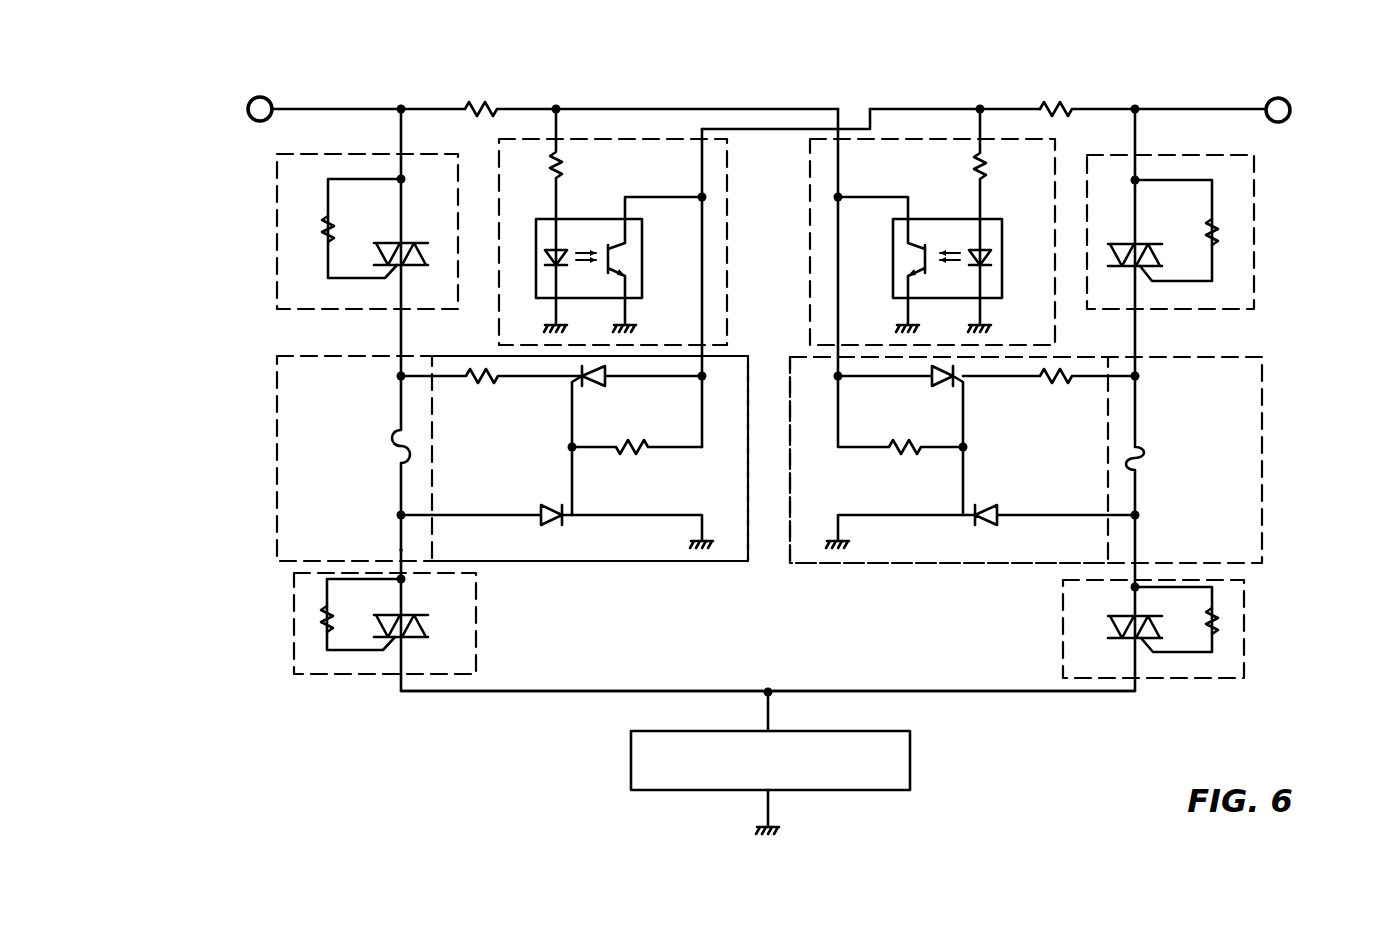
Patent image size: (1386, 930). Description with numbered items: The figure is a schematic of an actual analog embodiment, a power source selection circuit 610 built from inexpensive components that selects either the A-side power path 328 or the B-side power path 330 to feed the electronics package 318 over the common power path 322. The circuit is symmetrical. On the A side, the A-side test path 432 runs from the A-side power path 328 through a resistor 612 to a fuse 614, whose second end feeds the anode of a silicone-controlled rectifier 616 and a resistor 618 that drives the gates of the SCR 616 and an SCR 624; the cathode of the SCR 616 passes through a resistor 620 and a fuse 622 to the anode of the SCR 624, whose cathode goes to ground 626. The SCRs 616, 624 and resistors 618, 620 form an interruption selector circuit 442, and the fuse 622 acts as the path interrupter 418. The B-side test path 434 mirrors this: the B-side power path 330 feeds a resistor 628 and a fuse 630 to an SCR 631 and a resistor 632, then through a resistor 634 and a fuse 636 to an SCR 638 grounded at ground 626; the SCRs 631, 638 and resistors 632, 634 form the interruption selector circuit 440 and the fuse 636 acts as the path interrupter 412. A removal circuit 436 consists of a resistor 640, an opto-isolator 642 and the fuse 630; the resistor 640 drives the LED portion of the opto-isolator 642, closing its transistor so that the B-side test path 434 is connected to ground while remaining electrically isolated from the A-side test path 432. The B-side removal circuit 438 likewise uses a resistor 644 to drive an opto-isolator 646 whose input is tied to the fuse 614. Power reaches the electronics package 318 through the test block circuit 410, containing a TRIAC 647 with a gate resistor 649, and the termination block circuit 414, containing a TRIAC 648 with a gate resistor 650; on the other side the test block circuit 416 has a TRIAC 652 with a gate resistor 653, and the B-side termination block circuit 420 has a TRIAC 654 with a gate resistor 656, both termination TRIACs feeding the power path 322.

The electronics package 318 is at (631, 760).
The power path 322 is at (772, 694).
The A-side power path 328 is at (348, 108).
The B-side power path 330 is at (1192, 108).
The test block circuit 410 is at (277, 282).
The path interrupter 412 is at (277, 440).
The termination block circuit 414 is at (320, 675).
The test block circuit 416 is at (1255, 288).
The path interrupter 418 is at (1262, 406).
The B-side termination block circuit 420 is at (1245, 672).
The A-side test path 432 is at (605, 96).
The B-side test path 434 is at (1092, 88).
The removal circuit 436 is at (647, 138).
The B-side removal circuit 438 is at (888, 135).
The interruption selector circuit 440 is at (565, 562).
The interruption selector circuit 442 is at (852, 565).
The power source selection circuit 610 is at (775, 76).
The resistor 612 is at (482, 104).
The fuse 614 is at (833, 192).
The silicone-controlled rectifier 616 is at (938, 386).
The resistor 618 is at (910, 456).
The resistor 620 is at (1058, 386).
The fuse 622 is at (1142, 452).
The SCR 624 is at (1002, 512).
The ground 626 is at (550, 324).
The resistor 628 is at (1053, 104).
The fuse 630 is at (705, 170).
The SCR 631 is at (598, 384).
The resistor 632 is at (628, 457).
The resistor 634 is at (470, 386).
The fuse 636 is at (393, 446).
The SCR 638 is at (540, 512).
The resistor 640 is at (564, 168).
The opto-isolator 642 is at (642, 258).
The resistor 644 is at (975, 155).
The opto-isolator 646 is at (992, 212).
The TRIAC 647 is at (408, 240).
The TRIAC 648 is at (428, 618).
The resistor 649 is at (322, 226).
The resistor 650 is at (322, 628).
The TRIAC 652 is at (1113, 244).
The resistor 653 is at (1218, 226).
The TRIAC 654 is at (1108, 626).
The resistor 656 is at (1218, 612).